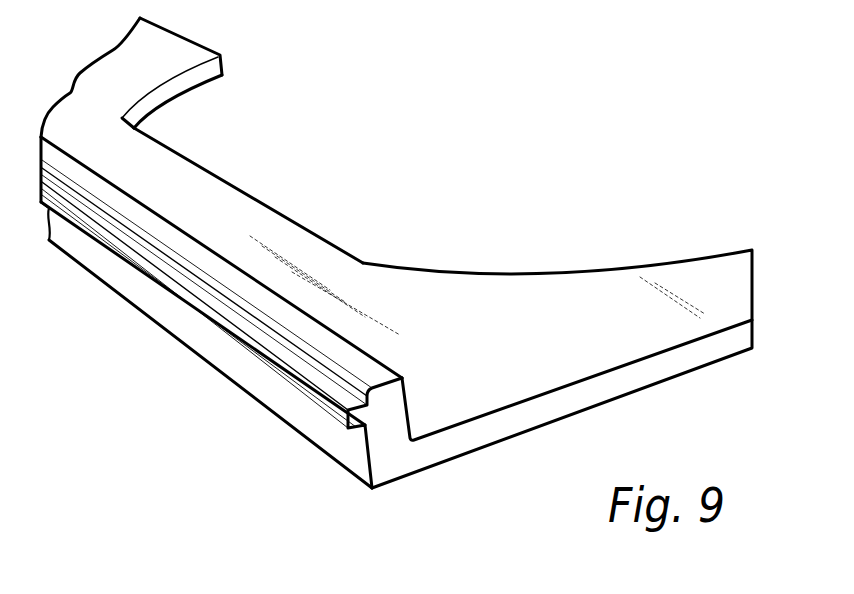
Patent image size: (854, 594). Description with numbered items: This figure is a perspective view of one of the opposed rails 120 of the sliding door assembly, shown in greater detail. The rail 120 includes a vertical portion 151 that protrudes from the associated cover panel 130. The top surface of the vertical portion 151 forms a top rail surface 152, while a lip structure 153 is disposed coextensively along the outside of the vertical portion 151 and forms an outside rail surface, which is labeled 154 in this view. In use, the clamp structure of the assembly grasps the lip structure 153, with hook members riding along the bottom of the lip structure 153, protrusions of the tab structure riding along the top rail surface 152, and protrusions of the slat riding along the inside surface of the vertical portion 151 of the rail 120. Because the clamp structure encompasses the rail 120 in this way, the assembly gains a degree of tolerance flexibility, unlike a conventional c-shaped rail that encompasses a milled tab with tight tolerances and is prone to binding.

The opposed rail 120 is at (285, 464).
The cover panel 130 is at (448, 444).
The vertical portion 151 is at (410, 408).
The top rail surface 152 is at (286, 327).
The lip structure 153 is at (359, 437).
The side surface 154 is at (277, 368).